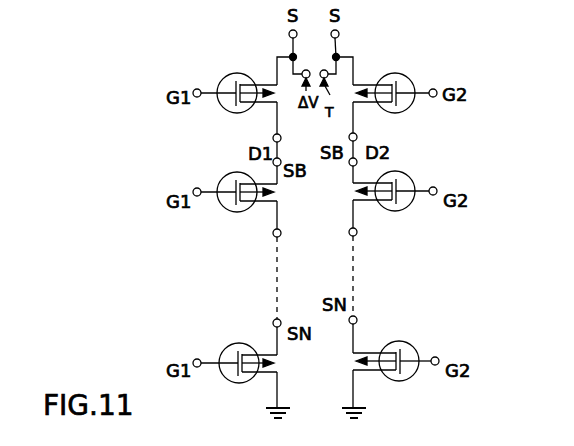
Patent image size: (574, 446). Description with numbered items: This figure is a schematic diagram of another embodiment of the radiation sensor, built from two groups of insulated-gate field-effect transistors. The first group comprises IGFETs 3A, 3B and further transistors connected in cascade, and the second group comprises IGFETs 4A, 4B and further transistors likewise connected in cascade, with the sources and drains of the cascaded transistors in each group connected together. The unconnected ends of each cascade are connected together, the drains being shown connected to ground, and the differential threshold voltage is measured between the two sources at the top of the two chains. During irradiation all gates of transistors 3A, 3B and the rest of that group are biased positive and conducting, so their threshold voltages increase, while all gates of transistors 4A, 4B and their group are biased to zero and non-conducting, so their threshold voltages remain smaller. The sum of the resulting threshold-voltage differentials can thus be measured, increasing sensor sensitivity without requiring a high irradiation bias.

The IGFET 3A is at (247, 72).
The IGFET 4A is at (389, 75).
The IGFET 3B is at (236, 174).
The IGFET 4B is at (400, 174).